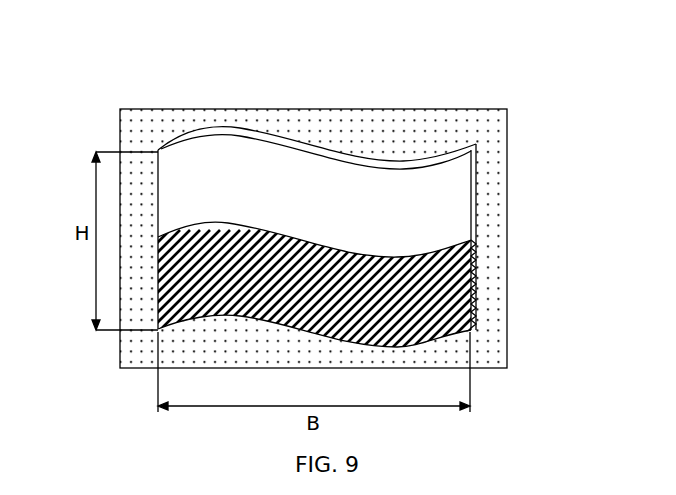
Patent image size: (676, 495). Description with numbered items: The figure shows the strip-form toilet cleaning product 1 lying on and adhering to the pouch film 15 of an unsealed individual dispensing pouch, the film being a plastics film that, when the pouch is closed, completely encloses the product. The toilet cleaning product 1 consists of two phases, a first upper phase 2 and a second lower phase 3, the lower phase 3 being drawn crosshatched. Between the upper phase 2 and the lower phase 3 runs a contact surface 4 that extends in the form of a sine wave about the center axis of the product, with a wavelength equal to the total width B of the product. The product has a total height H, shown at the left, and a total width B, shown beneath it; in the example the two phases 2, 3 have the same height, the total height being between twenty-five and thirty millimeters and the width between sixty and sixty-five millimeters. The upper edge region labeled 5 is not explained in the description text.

The toilet cleaning product 1 is at (356, 80).
The first upper phase 2 is at (209, 165).
The second lower phase 3 is at (158, 329).
The contact surface 4 is at (231, 223).
The upper hem strip 5 is at (387, 162).
The pouch film 15 is at (507, 212).